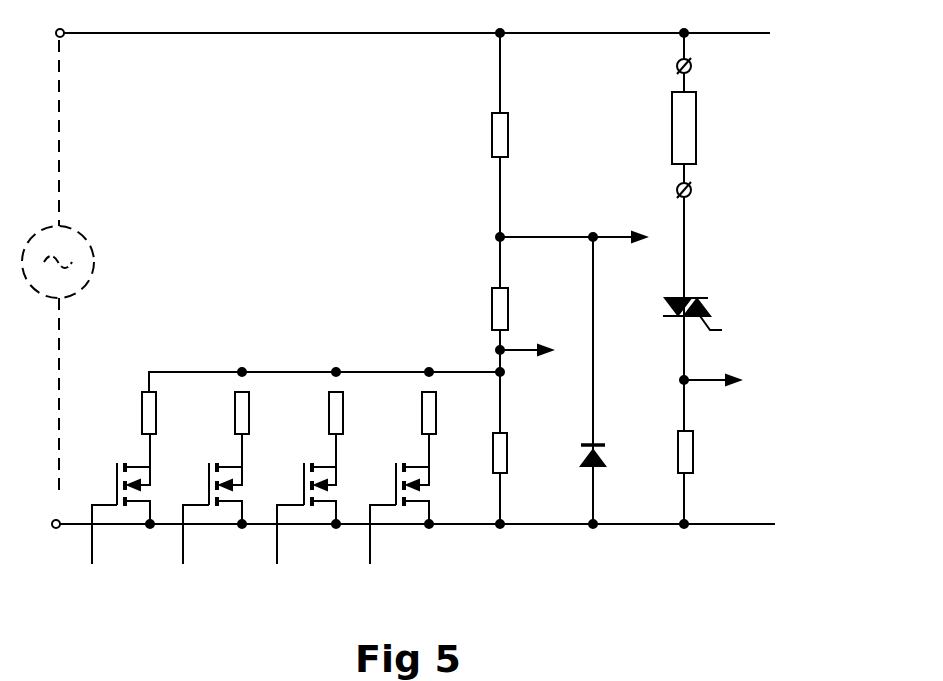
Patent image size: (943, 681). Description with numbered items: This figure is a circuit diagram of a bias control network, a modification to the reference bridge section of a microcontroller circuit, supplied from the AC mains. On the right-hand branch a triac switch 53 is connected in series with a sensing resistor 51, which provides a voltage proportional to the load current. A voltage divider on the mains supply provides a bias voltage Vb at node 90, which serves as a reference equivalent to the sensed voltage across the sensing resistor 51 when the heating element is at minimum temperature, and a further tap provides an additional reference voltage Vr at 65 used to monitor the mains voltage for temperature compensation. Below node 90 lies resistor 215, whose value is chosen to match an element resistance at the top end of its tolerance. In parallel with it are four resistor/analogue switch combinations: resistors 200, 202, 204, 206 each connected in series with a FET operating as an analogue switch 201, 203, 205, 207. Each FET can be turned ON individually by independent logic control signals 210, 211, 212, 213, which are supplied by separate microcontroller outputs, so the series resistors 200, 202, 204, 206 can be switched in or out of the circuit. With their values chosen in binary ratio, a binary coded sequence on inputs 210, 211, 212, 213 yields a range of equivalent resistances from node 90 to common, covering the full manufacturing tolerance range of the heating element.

The sensing resistor 51 is at (693, 452).
The triac switch 53 is at (672, 123).
The reference voltage Vr 65 is at (594, 236).
The bias voltage Vb 90 is at (502, 348).
The resistor 200 is at (422, 404).
The FET analogue switch 201 is at (431, 486).
The resistor 202 is at (329, 404).
The FET analogue switch 203 is at (338, 486).
The resistor 204 is at (235, 404).
The FET analogue switch 205 is at (244, 486).
The resistor 206 is at (142, 406).
The FET analogue switch 207 is at (152, 486).
The logic control signal 210 is at (92, 548).
The logic control signal 211 is at (183, 548).
The logic control signal 212 is at (277, 548).
The logic control signal 213 is at (370, 550).
The resistor 215 is at (507, 458).